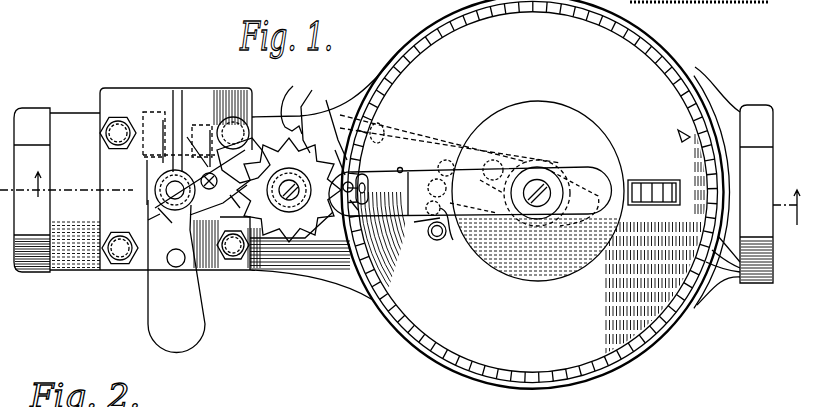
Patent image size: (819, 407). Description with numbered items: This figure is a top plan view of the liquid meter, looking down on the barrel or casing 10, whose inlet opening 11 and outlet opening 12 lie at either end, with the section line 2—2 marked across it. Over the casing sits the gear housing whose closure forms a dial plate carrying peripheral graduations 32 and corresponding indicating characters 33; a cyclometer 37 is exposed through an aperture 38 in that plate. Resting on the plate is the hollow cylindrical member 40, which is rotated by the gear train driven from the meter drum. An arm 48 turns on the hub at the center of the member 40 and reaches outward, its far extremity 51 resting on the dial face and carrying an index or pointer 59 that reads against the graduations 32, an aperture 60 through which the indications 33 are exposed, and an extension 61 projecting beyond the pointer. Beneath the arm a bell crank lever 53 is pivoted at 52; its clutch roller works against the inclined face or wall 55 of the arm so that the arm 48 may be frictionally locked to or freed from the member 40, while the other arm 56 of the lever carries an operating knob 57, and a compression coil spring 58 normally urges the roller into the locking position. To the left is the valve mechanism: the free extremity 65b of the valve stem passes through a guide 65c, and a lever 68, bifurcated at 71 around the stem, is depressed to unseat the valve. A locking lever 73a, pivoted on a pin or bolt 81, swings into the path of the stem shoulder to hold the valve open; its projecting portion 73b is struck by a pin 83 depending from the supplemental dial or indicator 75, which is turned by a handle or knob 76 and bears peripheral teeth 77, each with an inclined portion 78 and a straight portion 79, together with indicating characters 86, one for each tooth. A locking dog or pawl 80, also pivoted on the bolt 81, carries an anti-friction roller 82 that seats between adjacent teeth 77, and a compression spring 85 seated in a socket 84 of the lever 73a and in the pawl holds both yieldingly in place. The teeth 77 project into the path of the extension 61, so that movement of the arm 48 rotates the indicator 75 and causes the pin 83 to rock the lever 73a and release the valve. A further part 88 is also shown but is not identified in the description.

The section line 2 is at (405, 198).
The barrel or casing 10 is at (541, 197).
The inlet opening 11 is at (773, 180).
The outlet opening 12 is at (40, 120).
The peripheral graduations 32 is at (533, 197).
The indicating characters 33 is at (533, 192).
The cyclometer 37 is at (652, 205).
The aperture or opening 38 is at (648, 180).
The hollow cylindrical member 40 is at (552, 268).
The arm 48 is at (393, 167).
The extremity 51 is at (356, 206).
The pivot 52 is at (500, 165).
The bell crank lever 53 is at (483, 160).
The inclined face or wall 55 is at (437, 143).
The other arm of bell crank lever 56 is at (454, 242).
The operating knob or handle 57 is at (438, 240).
The coil spring 58 is at (414, 225).
The index or pointer 59 is at (397, 169).
The aperture 60 is at (371, 189).
The extension 61 is at (348, 182).
The free extremity of stem 65b is at (160, 196).
The guide 65c is at (150, 172).
The lever 68 is at (157, 313).
The bifurcation 71 is at (160, 112).
The locking lever 73a is at (157, 222).
The projecting portion 73b is at (273, 125).
The supplemental dial or indicator 75 is at (280, 268).
The operating handle or knob 76 is at (334, 121).
The peripheral teeth 77 is at (345, 148).
The inclined portion 78 is at (302, 121).
The straight portion 79 is at (262, 109).
The locking dog or pawl 80 is at (233, 261).
The pin or bolt 81 is at (212, 120).
The anti-friction roller 82 is at (254, 272).
The pin or projection 83 is at (289, 190).
The socket 84 is at (173, 276).
The elastic member 85 is at (202, 274).
The indicating characters 86 is at (343, 265).
The bolt 88 is at (120, 240).